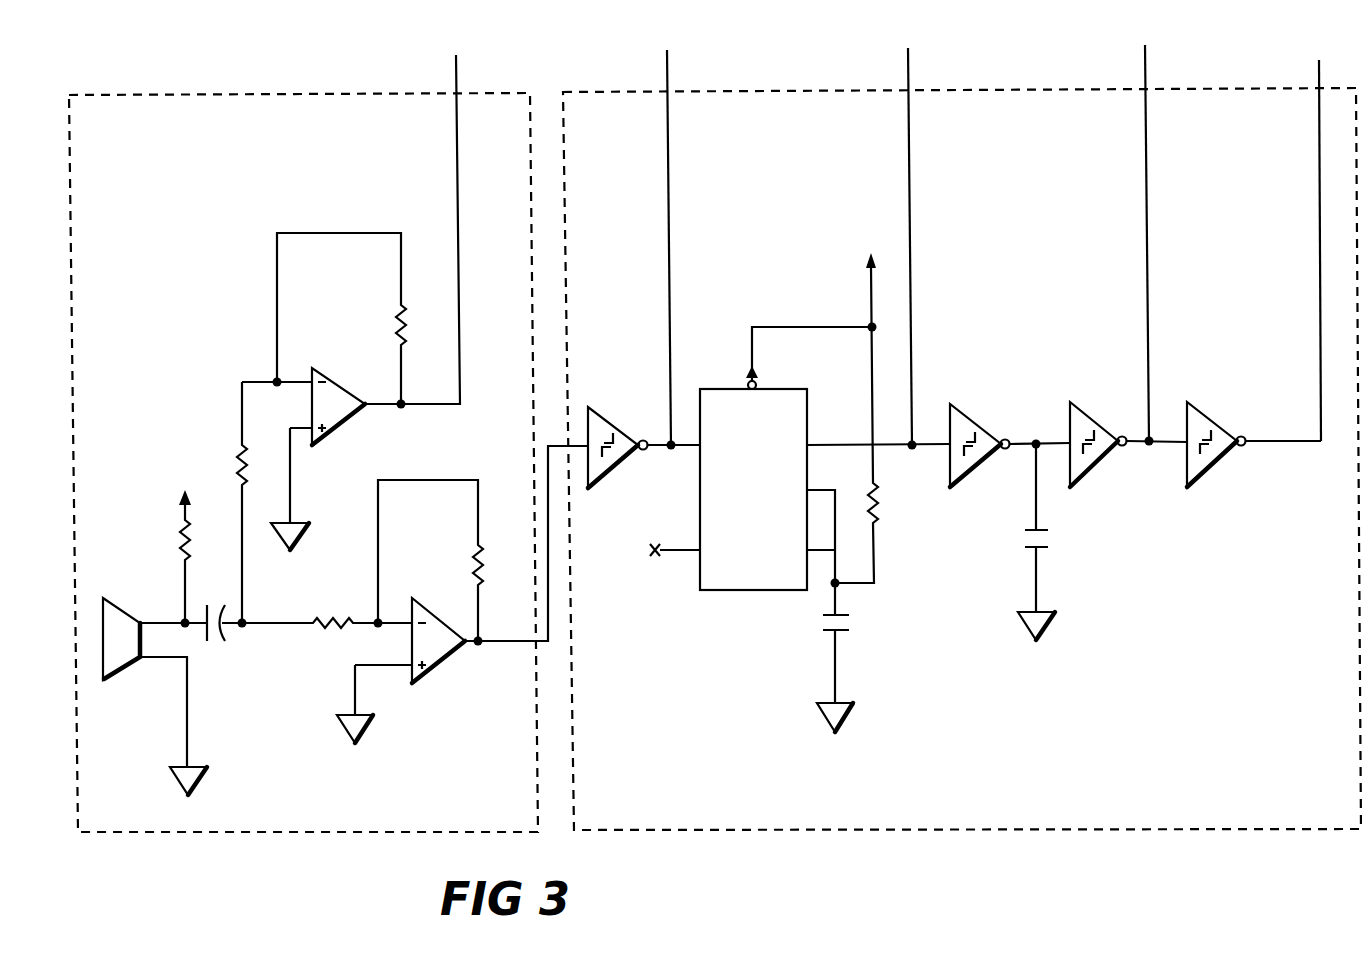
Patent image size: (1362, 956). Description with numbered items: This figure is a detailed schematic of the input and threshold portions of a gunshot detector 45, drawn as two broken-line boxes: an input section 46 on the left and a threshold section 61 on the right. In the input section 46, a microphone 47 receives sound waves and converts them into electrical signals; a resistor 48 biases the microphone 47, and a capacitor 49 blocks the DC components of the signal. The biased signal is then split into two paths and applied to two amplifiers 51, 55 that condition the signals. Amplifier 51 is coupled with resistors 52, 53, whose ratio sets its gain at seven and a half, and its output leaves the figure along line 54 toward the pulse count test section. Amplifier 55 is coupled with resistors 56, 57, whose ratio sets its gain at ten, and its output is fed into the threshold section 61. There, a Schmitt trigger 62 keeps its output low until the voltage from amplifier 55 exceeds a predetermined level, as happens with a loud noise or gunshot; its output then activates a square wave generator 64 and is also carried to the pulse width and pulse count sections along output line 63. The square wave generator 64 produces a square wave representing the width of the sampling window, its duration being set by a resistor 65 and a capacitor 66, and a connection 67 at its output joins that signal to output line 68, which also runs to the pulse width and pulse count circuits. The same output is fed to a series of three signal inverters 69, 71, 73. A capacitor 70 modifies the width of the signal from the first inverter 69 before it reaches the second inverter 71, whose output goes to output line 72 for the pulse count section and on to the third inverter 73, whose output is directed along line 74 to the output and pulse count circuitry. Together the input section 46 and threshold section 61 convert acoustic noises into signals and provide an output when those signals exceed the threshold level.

The gunshot detector 45 is at (594, 76).
The input section 46 is at (152, 94).
The microphone 47 is at (140, 598).
The resistor 48 is at (180, 545).
The capacitor 49 is at (207, 642).
The amplifier 51 is at (327, 442).
The resistor 52 is at (238, 446).
The resistor 53 is at (400, 320).
The line 54 is at (458, 340).
The amplifier 55 is at (440, 683).
The resistor 56 is at (320, 623).
The resistor 57 is at (480, 543).
The threshold section 61 is at (740, 92).
The Schmitt trigger 62 is at (625, 470).
The output line 63 is at (667, 180).
The square wave generator 64 is at (750, 380).
The resistor 65 is at (882, 525).
The capacitor 66 is at (845, 633).
The timer output line 67 is at (905, 443).
The output line 68 is at (908, 180).
The signal inverter 69 is at (997, 438).
The capacitor 70 is at (1030, 548).
The second signal inverter 71 is at (1115, 436).
The output line 72 is at (1147, 175).
The third signal inverter 73 is at (1232, 436).
The line 74 is at (1319, 212).